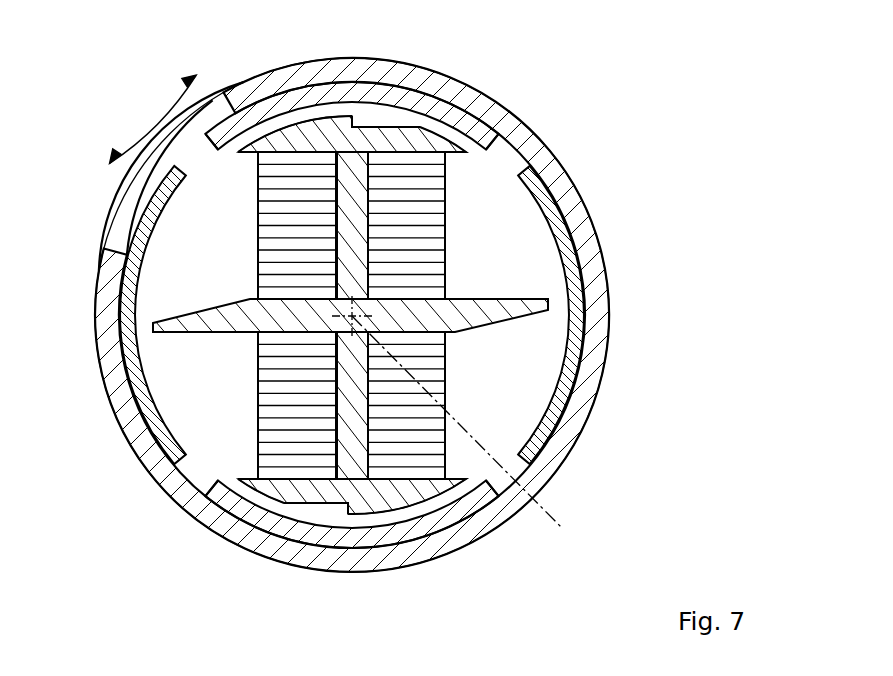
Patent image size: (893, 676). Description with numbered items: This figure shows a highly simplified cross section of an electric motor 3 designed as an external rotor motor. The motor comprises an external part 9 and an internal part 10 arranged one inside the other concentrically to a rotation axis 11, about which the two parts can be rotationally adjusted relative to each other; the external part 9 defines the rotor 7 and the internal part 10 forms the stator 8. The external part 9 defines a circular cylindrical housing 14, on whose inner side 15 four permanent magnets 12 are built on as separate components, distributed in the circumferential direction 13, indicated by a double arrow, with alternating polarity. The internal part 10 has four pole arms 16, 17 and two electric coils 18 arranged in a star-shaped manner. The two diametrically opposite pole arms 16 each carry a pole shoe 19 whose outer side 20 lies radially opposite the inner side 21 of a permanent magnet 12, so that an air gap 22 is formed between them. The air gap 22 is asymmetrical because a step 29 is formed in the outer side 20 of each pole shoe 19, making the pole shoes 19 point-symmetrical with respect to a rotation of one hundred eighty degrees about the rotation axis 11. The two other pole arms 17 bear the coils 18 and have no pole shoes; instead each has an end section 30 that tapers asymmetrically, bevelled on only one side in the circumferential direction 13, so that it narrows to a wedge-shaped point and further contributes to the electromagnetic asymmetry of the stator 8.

The electric motor 3 is at (718, 168).
The rotor 7 is at (566, 446).
The stator 8 is at (443, 246).
The external part 9 is at (604, 421).
The internal part 10 is at (369, 316).
The rotation axis 11 is at (463, 423).
The permanent magnet 12 is at (400, 78).
The circumferential direction 13 is at (153, 113).
The housing 14 is at (588, 183).
The inner side 15 is at (573, 203).
The pole arm 16 is at (346, 240).
The pole arm 17 is at (132, 326).
The electric coil 18 is at (331, 315).
The pole shoe 19 is at (275, 135).
The outer side 20 is at (425, 102).
The inner side 21 is at (462, 142).
The air gap 22 is at (313, 113).
The step 29 is at (358, 125).
The end section 30 is at (212, 320).